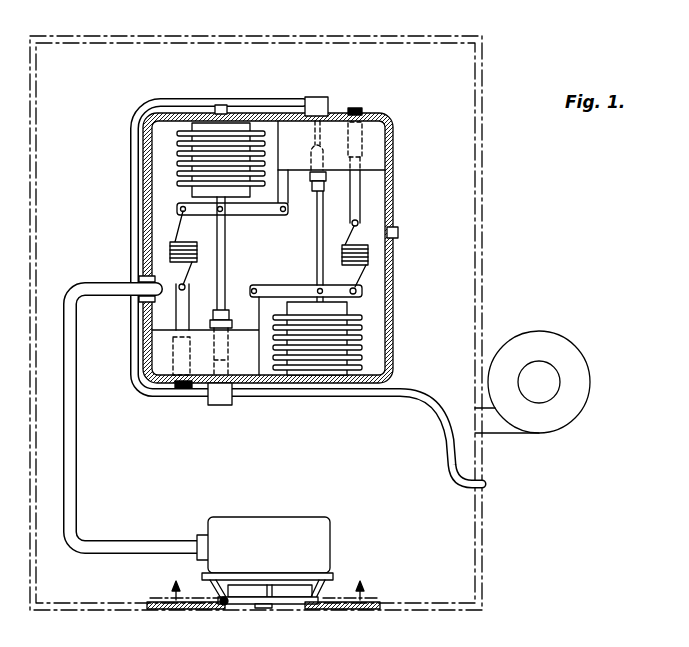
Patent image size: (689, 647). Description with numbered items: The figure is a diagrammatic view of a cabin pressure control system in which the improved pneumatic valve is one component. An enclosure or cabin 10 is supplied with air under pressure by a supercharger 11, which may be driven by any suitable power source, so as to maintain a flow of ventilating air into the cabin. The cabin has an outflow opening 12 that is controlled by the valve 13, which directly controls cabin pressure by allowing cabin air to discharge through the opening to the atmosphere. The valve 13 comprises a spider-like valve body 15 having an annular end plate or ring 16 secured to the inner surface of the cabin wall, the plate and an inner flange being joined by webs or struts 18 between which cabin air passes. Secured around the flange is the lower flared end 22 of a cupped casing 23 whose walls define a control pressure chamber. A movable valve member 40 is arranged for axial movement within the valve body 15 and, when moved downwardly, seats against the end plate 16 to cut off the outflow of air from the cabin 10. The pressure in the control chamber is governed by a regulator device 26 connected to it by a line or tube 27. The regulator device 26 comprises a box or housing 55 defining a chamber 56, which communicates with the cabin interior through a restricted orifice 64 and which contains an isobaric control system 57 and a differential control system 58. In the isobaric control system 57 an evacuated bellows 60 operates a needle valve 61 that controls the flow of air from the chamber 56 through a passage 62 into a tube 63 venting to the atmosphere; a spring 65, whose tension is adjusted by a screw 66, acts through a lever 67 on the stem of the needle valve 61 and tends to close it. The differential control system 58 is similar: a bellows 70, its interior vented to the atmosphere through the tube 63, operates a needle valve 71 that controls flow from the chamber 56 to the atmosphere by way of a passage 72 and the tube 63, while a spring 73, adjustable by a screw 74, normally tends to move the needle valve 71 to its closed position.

The enclosure or cabin 10 is at (483, 240).
The supercharger 11 is at (548, 345).
The outflow opening 12 is at (226, 606).
The valve 13 is at (284, 528).
The valve body 15 is at (255, 605).
The annular end plate or ring 16 is at (295, 604).
The webs or struts 18 is at (325, 605).
The lower flared end 22 is at (334, 573).
The cupped casing 23 is at (314, 524).
The regulator device 26 is at (305, 390).
The line or tube 27 is at (78, 490).
The movable valve member 40 is at (221, 609).
The box or housing 55 is at (393, 138).
The chamber 56 is at (380, 186).
The isobaric control system 57 is at (363, 300).
The differential control system 58 is at (163, 203).
The evacuated bellows 60 is at (362, 348).
The needle valve 61 is at (325, 157).
The passage 62 is at (318, 138).
The tube 63 is at (179, 105).
The restricted orifice 64 is at (396, 226).
The spring 65 is at (369, 262).
The screw 66 is at (360, 110).
The lever 67 is at (292, 290).
The bellows 70 is at (178, 164).
The needle valve 71 is at (227, 345).
The passage 72 is at (218, 365).
The spring 73 is at (171, 252).
The screw 74 is at (178, 389).